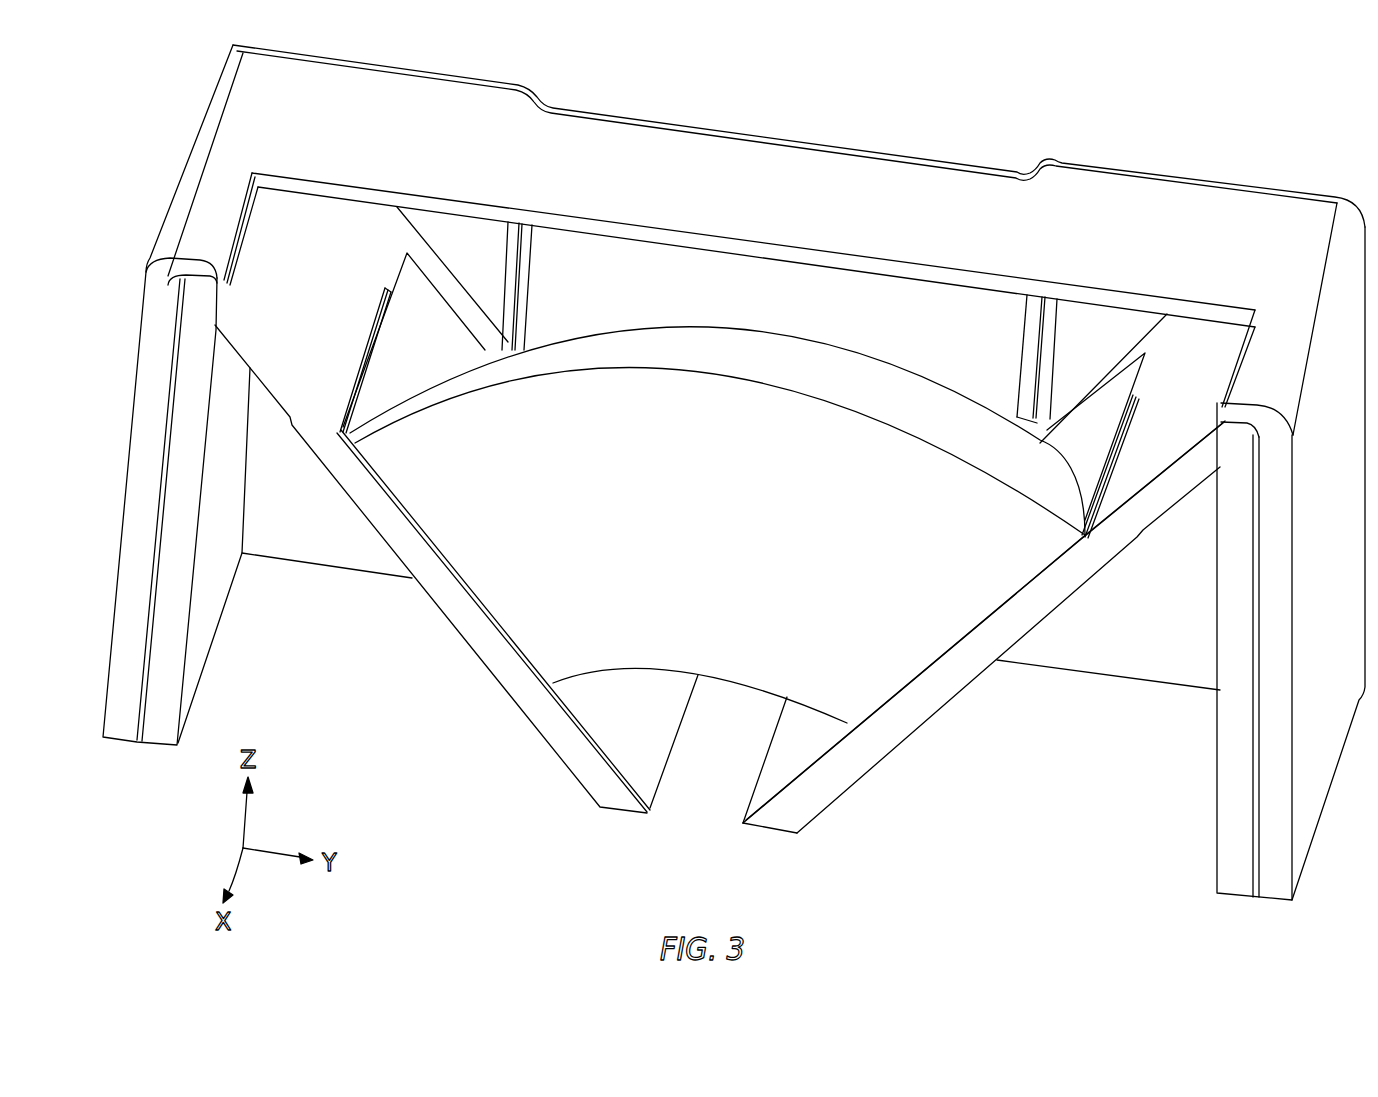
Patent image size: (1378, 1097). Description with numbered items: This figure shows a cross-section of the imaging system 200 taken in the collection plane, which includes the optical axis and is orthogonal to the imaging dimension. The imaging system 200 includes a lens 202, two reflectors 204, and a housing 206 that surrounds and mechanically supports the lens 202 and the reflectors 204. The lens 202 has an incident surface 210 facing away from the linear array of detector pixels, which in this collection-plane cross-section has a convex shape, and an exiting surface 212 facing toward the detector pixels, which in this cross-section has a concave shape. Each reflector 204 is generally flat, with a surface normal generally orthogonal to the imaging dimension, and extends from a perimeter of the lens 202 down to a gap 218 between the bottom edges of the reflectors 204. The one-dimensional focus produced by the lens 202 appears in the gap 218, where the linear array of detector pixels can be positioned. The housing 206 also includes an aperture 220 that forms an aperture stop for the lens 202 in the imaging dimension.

The imaging system 200 is at (138, 141).
The lens 202 is at (726, 490).
The reflector 204 is at (632, 724).
The housing 206 is at (674, 193).
The incident surface 210 is at (877, 396).
The exiting surface 212 is at (758, 688).
The gap 218 is at (703, 808).
The aperture 220 is at (300, 238).